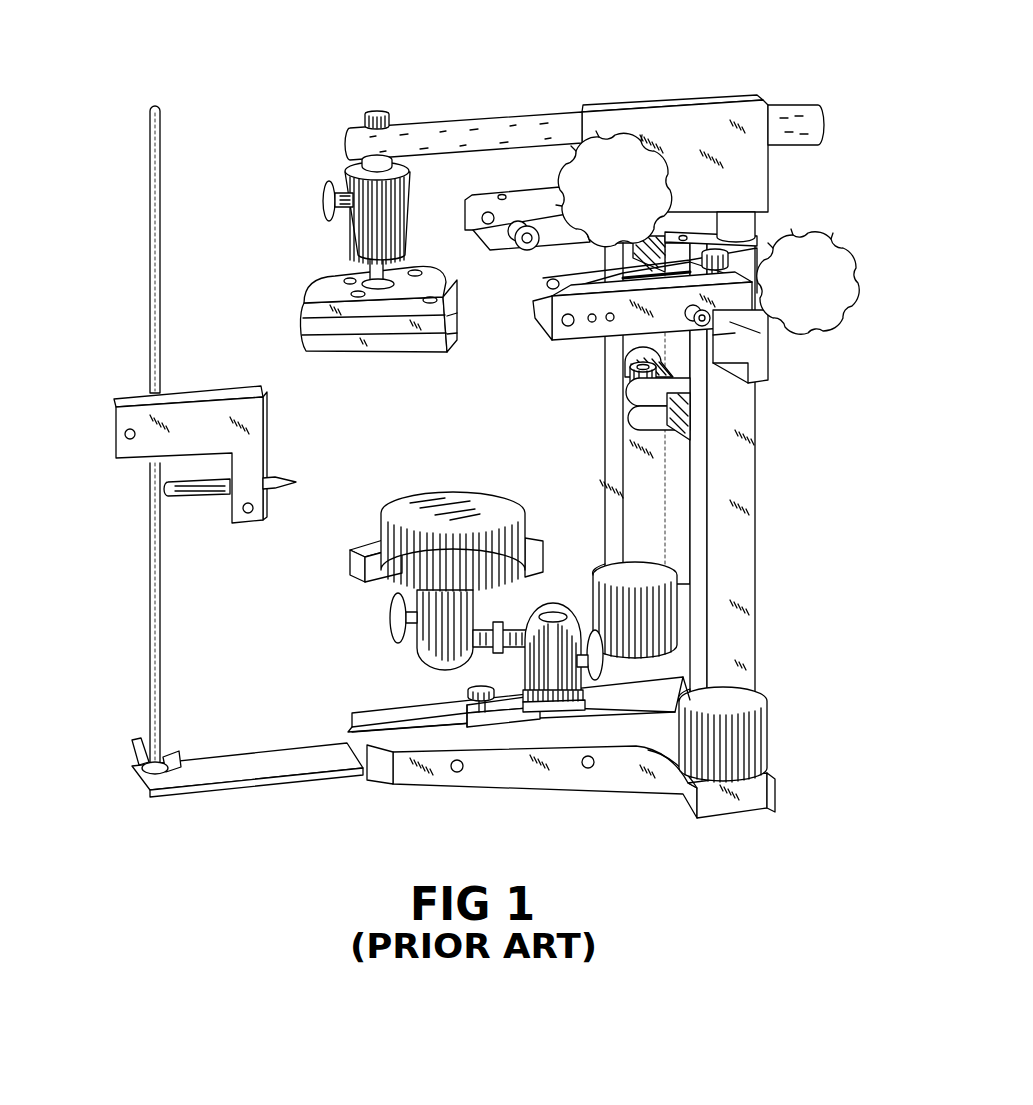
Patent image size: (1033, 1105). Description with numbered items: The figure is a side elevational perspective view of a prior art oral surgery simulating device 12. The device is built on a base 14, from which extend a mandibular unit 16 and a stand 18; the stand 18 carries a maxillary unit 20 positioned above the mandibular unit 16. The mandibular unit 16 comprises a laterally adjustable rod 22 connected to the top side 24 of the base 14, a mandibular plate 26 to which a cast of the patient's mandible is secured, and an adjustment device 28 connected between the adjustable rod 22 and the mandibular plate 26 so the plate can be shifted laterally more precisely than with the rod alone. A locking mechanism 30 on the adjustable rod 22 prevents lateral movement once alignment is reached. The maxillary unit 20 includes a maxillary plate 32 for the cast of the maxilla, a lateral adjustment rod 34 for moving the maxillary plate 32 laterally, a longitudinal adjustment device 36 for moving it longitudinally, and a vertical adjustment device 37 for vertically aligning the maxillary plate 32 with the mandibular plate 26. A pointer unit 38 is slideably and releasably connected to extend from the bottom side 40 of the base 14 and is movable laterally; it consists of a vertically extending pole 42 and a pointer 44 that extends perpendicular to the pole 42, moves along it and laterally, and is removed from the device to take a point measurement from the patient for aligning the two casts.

The oral surgery simulating device 12 is at (558, 188).
The base 14 is at (567, 766).
The mandibular unit 16 is at (438, 560).
The stand 18 is at (738, 543).
The maxillary unit 20 is at (368, 253).
The laterally adjustable rod 22 is at (497, 716).
The top side 24 is at (443, 744).
The mandibular plate 26 is at (510, 513).
The adjustment device 28 is at (555, 607).
The locking mechanism 30 is at (467, 690).
The maxillary plate 32 is at (403, 309).
The lateral adjustment rod 34 is at (553, 112).
The longitudinal adjustment device 36 is at (794, 382).
The vertical adjustment device 37 is at (415, 218).
The pointer unit 38 is at (131, 529).
The bottom side 40 is at (359, 805).
The vertically extending pole 42 is at (146, 267).
The pointer 44 is at (277, 473).